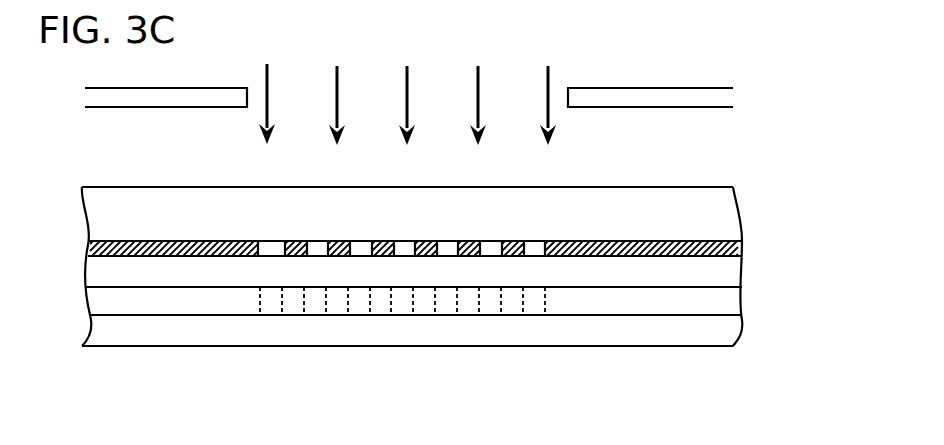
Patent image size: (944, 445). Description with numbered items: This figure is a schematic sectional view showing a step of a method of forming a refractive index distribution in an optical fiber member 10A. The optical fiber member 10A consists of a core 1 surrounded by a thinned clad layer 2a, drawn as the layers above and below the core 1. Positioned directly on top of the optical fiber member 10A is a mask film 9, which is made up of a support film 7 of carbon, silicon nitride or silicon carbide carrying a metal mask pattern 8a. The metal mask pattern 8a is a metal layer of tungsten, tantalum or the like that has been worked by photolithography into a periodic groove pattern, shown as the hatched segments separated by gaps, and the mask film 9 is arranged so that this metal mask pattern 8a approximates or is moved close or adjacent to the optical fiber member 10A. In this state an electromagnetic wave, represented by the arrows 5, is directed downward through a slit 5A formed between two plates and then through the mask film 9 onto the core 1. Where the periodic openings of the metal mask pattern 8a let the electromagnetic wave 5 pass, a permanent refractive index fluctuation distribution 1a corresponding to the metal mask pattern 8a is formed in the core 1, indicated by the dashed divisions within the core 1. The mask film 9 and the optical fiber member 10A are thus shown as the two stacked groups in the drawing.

The electromagnetic wave 5 is at (549, 78).
The slit 5A is at (670, 98).
The support film 7 is at (729, 213).
The metal mask pattern 8a is at (733, 246).
The mask film 9 is at (464, 221).
The thinned clad layer 2a is at (733, 279).
The core 1 is at (441, 345).
The refractive index fluctuation distribution 1a is at (532, 308).
The optical fiber member 10A is at (478, 332).